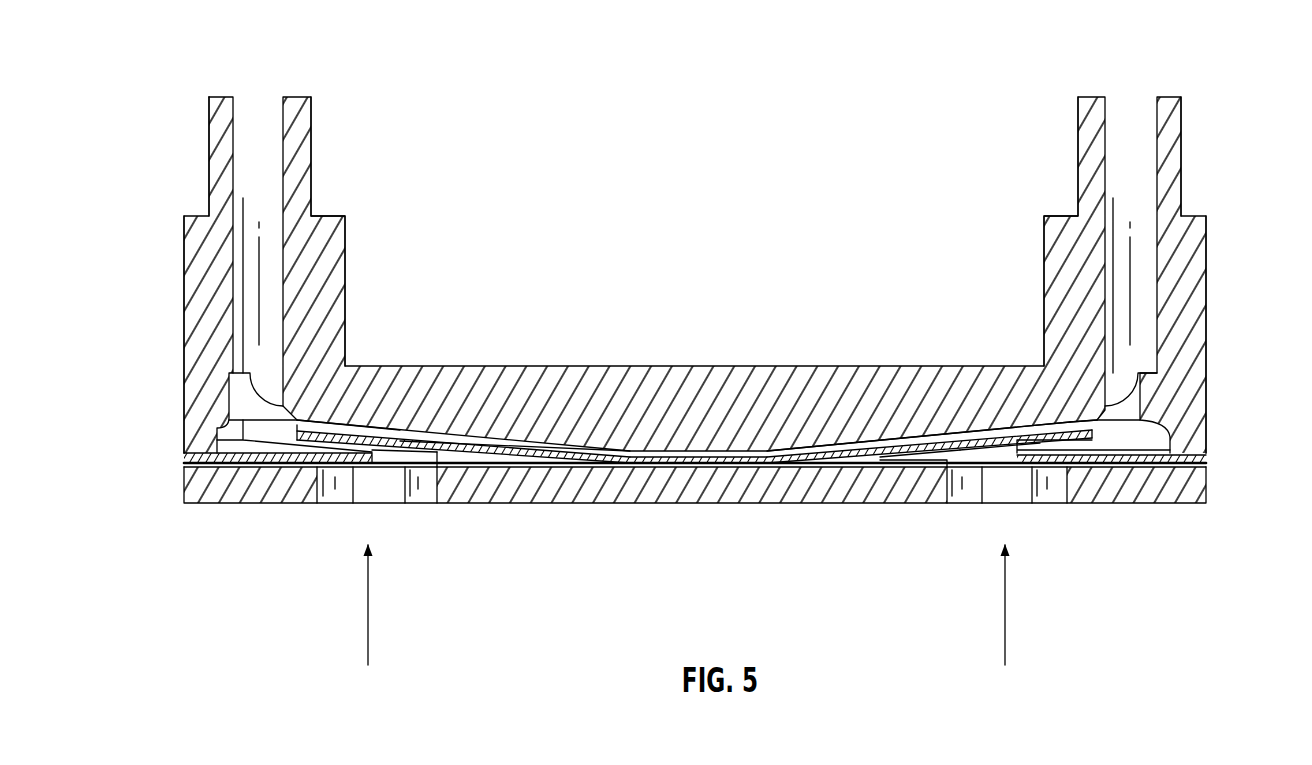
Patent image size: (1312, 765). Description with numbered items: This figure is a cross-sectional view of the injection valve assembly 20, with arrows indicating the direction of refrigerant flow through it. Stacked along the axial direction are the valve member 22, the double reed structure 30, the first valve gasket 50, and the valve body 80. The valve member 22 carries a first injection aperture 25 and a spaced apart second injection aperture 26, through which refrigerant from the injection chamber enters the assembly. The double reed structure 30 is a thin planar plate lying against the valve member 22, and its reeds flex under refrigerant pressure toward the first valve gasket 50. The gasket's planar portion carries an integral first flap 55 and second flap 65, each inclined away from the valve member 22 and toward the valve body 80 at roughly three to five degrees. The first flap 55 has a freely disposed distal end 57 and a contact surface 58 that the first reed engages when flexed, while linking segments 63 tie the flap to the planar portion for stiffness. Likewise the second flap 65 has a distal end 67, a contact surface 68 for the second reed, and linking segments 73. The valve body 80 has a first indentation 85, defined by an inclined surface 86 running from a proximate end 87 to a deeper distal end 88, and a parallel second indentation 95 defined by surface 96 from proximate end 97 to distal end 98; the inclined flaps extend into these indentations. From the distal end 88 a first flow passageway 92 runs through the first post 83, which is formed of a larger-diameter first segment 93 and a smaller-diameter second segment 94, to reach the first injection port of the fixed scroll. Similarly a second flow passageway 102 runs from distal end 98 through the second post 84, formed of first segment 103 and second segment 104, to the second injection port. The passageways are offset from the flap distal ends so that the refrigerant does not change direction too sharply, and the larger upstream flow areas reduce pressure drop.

The valve assembly 20 is at (189, 120).
The valve member 22 is at (177, 488).
The first injection aperture 25 is at (319, 490).
The second injection aperture 26 is at (950, 484).
The double reed structure 30 is at (307, 470).
The first valve gasket 50 is at (176, 459).
The first flap 55 is at (415, 455).
The distal end 57 is at (297, 437).
The contact surface 58 is at (458, 462).
The linking segments 63 is at (455, 440).
The second flap 65 is at (975, 440).
The distal end 67 is at (1095, 430).
The contact surface 68 is at (1000, 458).
The linking segments 73 is at (965, 436).
The valve body 80 is at (178, 341).
The first post 83 is at (352, 252).
The second post 84 is at (1036, 237).
The first indentation 85 is at (392, 420).
The surface 86 is at (515, 440).
The proximate end 87 is at (632, 452).
The distal end 88 is at (300, 418).
The first flow passageway 92 is at (250, 253).
The first segment 93 is at (184, 301).
The second segment 94 is at (208, 205).
The second indentation 95 is at (1016, 418).
The surface 96 is at (885, 437).
The proximate end 97 is at (765, 450).
The distal end 98 is at (1100, 416).
The second flow passageway 102 is at (1140, 274).
The first segment 103 is at (1207, 299).
The second segment 104 is at (1182, 206).